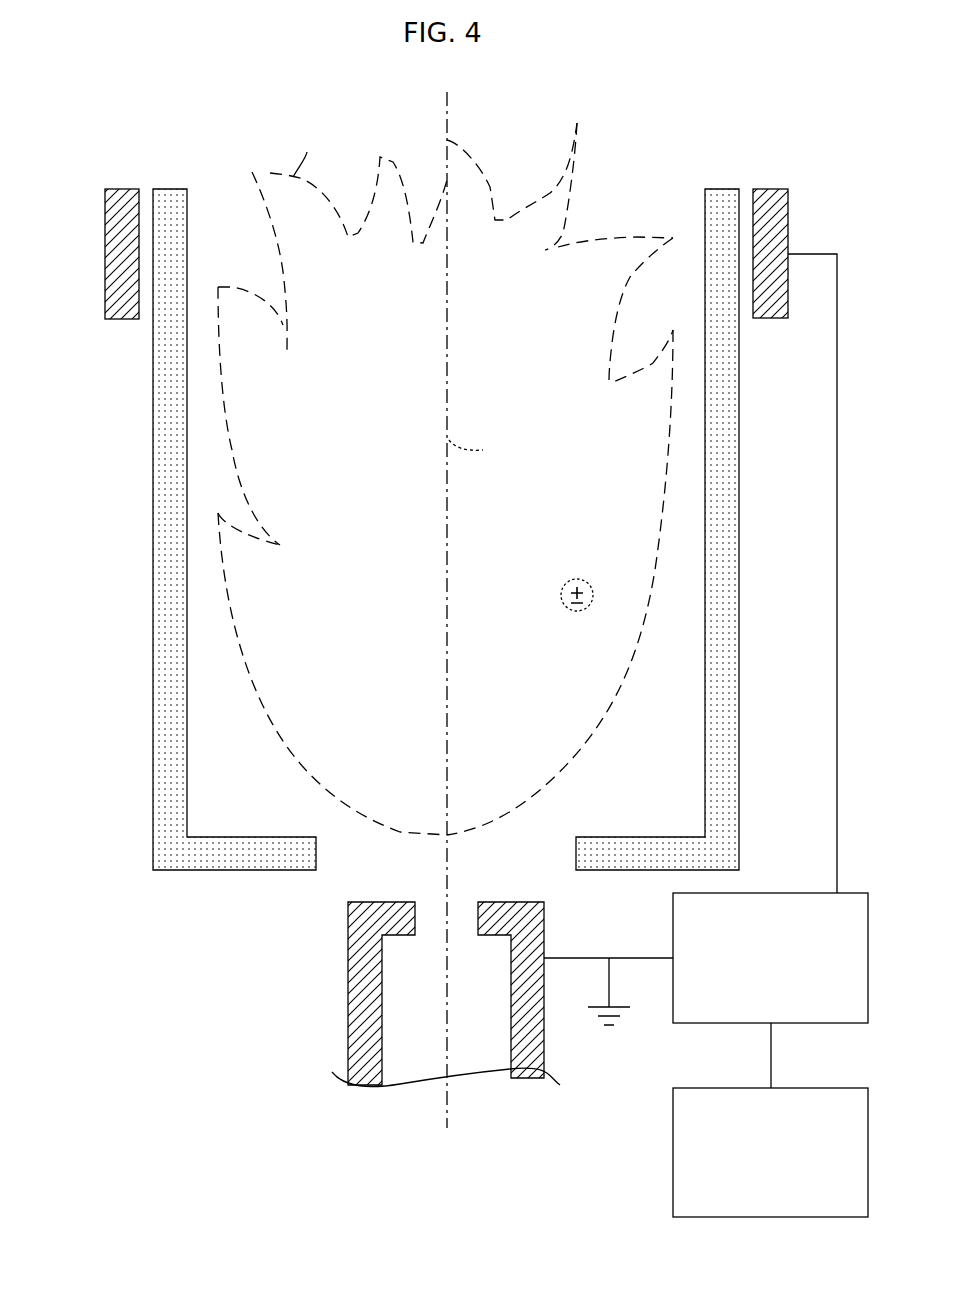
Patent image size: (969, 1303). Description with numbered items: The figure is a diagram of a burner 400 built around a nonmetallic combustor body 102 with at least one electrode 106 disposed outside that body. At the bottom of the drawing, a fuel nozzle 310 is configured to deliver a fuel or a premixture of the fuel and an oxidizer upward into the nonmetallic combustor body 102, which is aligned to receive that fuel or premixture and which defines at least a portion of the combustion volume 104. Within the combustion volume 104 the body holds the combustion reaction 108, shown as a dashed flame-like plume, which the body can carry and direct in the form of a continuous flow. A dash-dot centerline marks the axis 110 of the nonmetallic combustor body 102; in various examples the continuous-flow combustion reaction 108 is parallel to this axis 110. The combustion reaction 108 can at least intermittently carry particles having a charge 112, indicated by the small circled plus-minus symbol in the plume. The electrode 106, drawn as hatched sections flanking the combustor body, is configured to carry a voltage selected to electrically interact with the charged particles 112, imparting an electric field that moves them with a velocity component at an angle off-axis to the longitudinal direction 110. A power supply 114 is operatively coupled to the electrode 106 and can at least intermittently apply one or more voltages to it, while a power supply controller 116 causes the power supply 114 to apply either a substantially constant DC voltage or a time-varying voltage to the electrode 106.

The burner 400 is at (235, 120).
The nonmetallic combustor body 102 is at (153, 760).
The combustion volume 104 is at (356, 536).
The electrode 106 is at (105, 254).
The combustion reaction 108 is at (445, 470).
The axis 110 is at (487, 446).
The charged particles 112 is at (577, 579).
The power supply 114 is at (770, 958).
The power supply controller 116 is at (770, 1152).
The fuel nozzle 310 is at (348, 980).